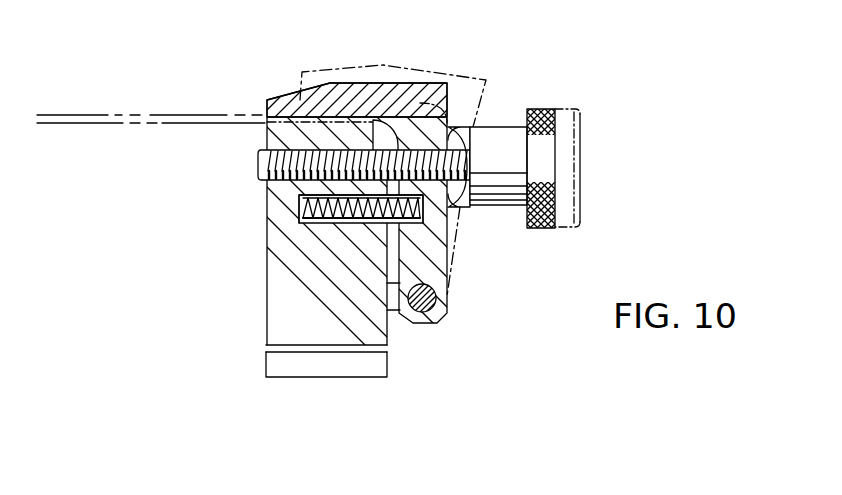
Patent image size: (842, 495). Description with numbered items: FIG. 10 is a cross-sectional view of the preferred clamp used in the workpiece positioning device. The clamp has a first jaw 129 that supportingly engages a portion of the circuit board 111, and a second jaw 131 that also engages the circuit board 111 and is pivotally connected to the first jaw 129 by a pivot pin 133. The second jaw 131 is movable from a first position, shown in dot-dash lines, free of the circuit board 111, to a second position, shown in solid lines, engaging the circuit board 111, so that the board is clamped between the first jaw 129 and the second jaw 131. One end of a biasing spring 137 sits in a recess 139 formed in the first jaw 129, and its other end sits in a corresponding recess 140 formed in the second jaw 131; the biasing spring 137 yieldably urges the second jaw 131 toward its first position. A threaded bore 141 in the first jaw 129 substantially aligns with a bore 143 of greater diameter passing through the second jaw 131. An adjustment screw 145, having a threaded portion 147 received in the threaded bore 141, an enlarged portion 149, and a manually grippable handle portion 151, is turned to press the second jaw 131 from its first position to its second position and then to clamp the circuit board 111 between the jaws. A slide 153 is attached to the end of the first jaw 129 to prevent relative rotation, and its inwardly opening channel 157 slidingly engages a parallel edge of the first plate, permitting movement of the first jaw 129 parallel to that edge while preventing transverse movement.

The circuit board 111 is at (97, 115).
The first jaw 129 is at (266, 304).
The second jaw 131 is at (285, 99).
The pivot pin 133 is at (448, 297).
The biasing spring 137 is at (300, 222).
The recess 139 is at (302, 204).
The recess 140 is at (432, 243).
The threaded bore 141 is at (270, 149).
The bore 143 is at (472, 124).
The adjustment screw 145 is at (556, 173).
The threaded portion 147 is at (300, 196).
The enlarged portion 149 is at (505, 126).
The manually grippable handle portion 151 is at (543, 228).
The slide 153 is at (387, 358).
The inwardly opening channel 157 is at (266, 364).